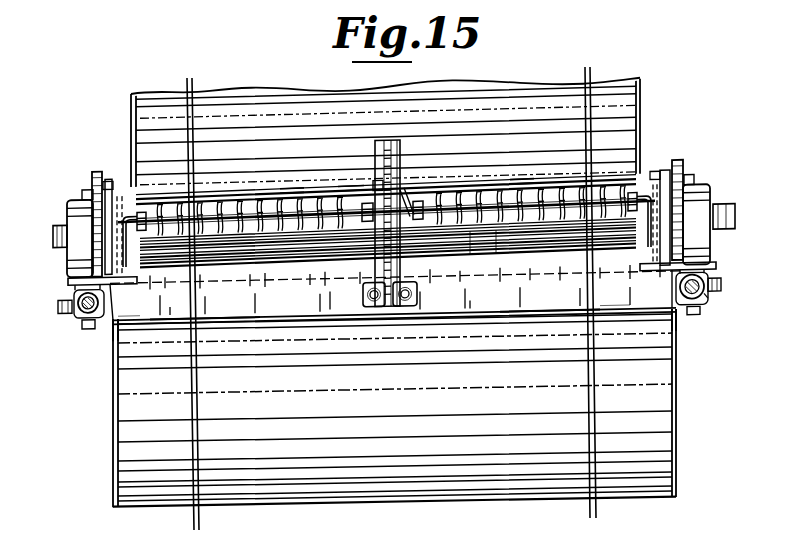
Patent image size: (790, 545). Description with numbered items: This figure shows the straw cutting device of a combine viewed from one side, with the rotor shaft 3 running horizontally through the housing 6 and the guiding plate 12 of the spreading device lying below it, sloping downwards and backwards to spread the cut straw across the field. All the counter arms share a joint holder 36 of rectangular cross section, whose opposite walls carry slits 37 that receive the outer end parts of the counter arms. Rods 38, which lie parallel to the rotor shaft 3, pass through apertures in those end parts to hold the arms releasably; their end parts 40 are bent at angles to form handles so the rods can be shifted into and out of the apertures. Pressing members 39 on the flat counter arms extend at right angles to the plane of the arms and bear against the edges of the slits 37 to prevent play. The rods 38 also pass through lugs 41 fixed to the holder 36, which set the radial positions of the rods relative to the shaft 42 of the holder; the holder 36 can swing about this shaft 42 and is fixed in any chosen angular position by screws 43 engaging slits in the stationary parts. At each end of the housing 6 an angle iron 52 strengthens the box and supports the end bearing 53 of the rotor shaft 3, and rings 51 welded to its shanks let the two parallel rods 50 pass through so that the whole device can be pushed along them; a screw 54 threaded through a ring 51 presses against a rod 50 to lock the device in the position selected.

The rotor shaft 3 is at (722, 211).
The housing 6 is at (524, 95).
The guiding plate 12 is at (483, 502).
The holder 36 is at (350, 196).
The slits 37 is at (483, 233).
The rods 38 is at (472, 200).
The pressing members 39 is at (290, 196).
The end parts of the rods 40 is at (130, 261).
The lugs 41 is at (125, 198).
The shaft of the holder 42 is at (374, 296).
The screws 43 is at (96, 165).
The rods 50 is at (82, 312).
The rings 51 is at (708, 305).
The angle iron 52 is at (120, 314).
The end bearing 53 is at (78, 193).
The screw 54 is at (721, 291).